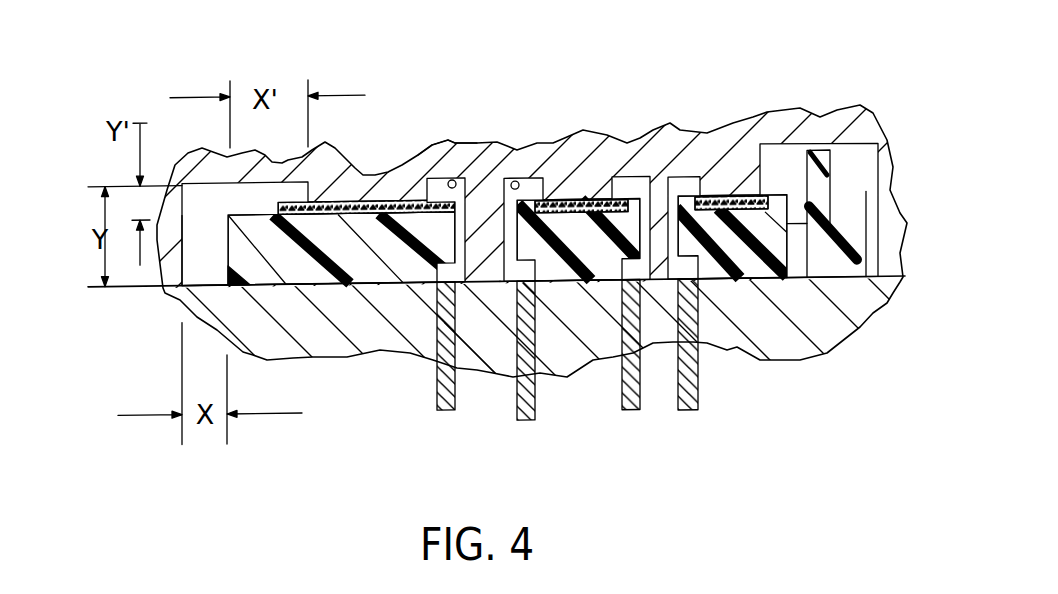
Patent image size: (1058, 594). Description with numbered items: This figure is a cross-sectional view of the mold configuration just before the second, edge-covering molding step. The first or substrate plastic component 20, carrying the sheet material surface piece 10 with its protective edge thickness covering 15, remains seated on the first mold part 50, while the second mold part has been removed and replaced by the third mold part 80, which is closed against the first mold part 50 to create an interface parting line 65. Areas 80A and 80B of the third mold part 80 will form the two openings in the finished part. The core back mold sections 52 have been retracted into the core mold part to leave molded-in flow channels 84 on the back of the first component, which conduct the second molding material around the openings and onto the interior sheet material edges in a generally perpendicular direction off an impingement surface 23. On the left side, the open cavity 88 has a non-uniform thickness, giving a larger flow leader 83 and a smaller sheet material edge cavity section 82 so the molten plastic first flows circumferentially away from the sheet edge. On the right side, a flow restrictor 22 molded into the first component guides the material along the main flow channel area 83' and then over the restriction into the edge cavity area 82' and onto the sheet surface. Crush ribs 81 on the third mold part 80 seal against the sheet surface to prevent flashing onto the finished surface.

The sheet material surface piece 10 is at (422, 145).
The protective edge thickness covering 15 is at (278, 220).
The first or substrate plastic component 20 is at (370, 262).
The flow restrictor 22 is at (812, 152).
The impingement surface 23 is at (440, 140).
The first mold part 50 is at (568, 368).
The core back mold sections 52 is at (442, 413).
The interface parting line 65 is at (475, 350).
The third mold part 80 is at (596, 150).
The area of the third mold part 80A is at (420, 202).
The area of the third mold part 80B is at (655, 180).
The crush ribs 81 is at (400, 203).
The sheet material edge cavity section 82 is at (232, 201).
The edge cavity area 82' is at (819, 145).
The flow leader 83 is at (162, 302).
The main flow channel area 83' is at (858, 291).
The molded-in flow channels 84 is at (438, 296).
The open cavity 88 is at (196, 232).